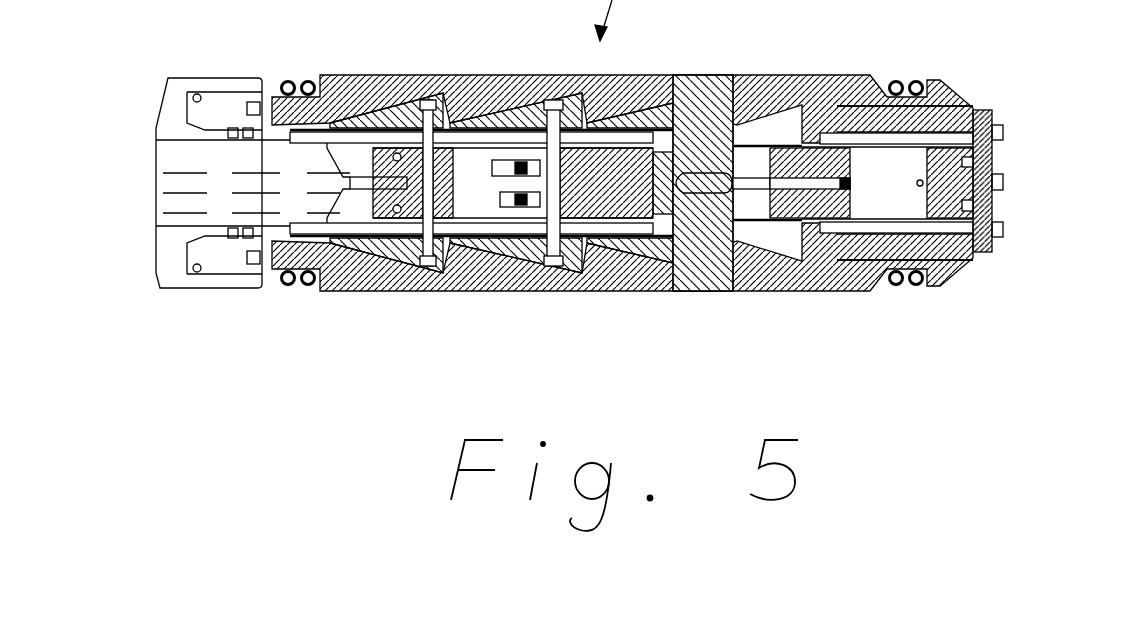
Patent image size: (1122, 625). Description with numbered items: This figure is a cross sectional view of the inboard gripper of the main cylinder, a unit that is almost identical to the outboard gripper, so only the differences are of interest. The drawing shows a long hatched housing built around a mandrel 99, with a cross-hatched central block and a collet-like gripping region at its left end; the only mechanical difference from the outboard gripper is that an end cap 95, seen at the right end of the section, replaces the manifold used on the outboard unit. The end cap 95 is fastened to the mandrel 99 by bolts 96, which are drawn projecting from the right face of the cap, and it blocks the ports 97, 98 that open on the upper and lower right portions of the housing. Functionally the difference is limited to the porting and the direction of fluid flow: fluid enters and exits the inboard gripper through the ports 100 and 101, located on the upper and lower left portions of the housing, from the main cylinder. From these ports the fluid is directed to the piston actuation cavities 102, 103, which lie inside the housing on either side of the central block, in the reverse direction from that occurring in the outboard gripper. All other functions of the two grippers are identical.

The end cap 95 is at (1020, 140).
The bolts 96 is at (1055, 152).
The port 97 is at (628, 75).
The port 98 is at (654, 271).
The mandrel 99 is at (885, 320).
The port 100 is at (386, 78).
The port 101 is at (385, 297).
The piston actuation cavity 102 is at (460, 180).
The piston actuation cavity 103 is at (877, 178).